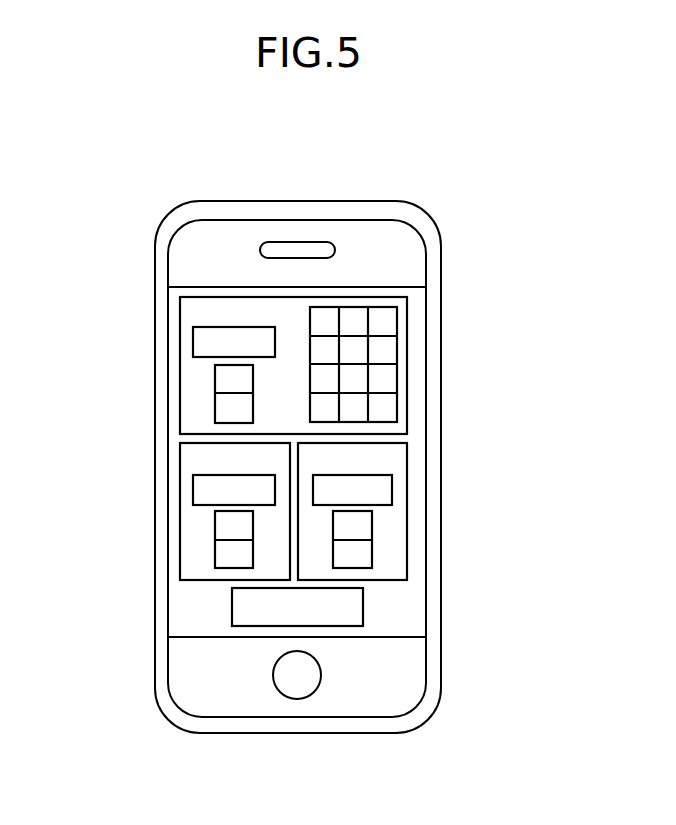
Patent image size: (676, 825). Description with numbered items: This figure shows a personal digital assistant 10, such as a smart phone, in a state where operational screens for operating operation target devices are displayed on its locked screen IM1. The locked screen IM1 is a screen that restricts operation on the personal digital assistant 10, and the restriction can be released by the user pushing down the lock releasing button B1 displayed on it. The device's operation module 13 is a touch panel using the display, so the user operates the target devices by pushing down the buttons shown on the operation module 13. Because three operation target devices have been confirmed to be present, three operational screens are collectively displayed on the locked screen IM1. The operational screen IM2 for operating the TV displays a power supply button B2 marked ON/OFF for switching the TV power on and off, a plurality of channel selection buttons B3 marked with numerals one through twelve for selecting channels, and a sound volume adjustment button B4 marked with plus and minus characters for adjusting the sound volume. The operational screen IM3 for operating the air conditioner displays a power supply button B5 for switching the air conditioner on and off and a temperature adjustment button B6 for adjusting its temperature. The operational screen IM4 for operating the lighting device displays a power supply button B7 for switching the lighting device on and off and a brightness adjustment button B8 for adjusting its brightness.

The personal digital assistant 10 is at (372, 201).
The operation module 13 is at (180, 302).
The locked screen IM1 is at (408, 435).
The operational screen IM2 is at (200, 417).
The operational screen IM3 is at (200, 565).
The operational screen IM4 is at (388, 565).
The lock releasing button B1 is at (363, 610).
The power supply button B2 is at (195, 335).
The channel selection buttons B3 is at (390, 322).
The sound volume adjustment button B4 is at (218, 378).
The power supply button B5 is at (195, 483).
The temperature adjustment button B6 is at (218, 522).
The power supply button B7 is at (393, 483).
The brightness adjustment button B8 is at (360, 522).